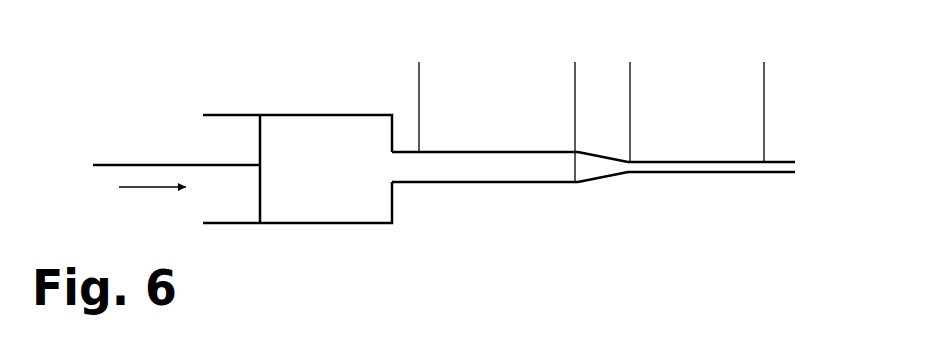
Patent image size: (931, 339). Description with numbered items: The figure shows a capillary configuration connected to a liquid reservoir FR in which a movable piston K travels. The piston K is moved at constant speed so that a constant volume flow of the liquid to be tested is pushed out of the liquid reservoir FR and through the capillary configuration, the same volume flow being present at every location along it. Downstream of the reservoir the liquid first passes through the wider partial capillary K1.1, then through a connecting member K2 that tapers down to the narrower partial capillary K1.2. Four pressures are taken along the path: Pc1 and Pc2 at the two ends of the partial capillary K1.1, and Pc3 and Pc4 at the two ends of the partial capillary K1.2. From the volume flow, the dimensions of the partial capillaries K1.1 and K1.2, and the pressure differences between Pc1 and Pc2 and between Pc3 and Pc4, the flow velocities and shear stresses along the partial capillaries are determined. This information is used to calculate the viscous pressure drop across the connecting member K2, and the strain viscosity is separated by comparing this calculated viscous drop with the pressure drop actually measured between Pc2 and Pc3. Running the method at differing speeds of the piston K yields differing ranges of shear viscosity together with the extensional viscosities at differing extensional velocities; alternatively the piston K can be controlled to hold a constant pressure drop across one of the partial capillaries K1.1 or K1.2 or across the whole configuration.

The movable piston K is at (176, 161).
The liquid reservoir FR is at (297, 169).
The partial capillary K1.1 is at (475, 183).
The connecting member K2 is at (611, 175).
The partial capillary K1.2 is at (737, 173).
The pressure measurement point Pc1 is at (419, 85).
The pressure measurement point Pc2 is at (573, 100).
The pressure measurement point Pc3 is at (630, 90).
The pressure measurement point Pc4 is at (764, 90).